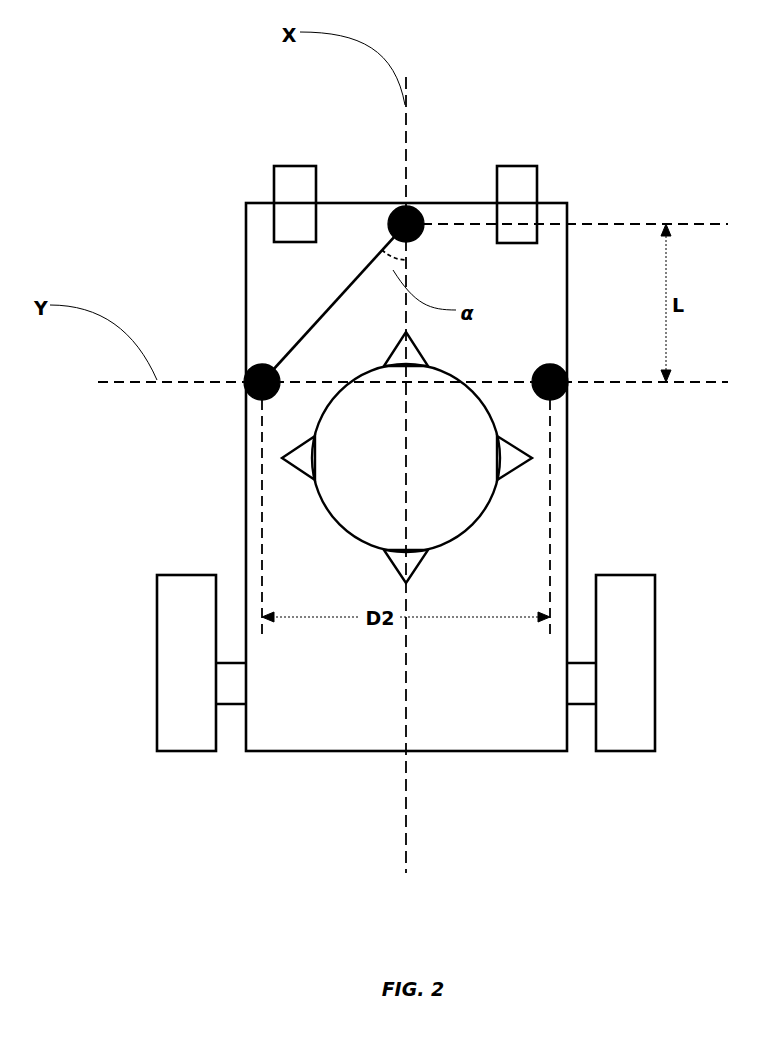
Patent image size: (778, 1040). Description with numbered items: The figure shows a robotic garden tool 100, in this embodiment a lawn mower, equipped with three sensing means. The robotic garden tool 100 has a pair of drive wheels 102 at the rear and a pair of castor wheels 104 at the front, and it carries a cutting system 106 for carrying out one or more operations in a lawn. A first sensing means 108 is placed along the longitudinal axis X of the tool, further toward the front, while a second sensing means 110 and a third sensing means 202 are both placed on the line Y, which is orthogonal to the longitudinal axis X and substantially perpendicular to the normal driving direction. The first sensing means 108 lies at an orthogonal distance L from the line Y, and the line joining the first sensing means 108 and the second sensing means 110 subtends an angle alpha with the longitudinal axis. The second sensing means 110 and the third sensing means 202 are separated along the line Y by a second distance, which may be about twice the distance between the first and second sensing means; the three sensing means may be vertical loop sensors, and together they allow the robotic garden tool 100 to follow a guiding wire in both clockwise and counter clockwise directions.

The robotic garden tool 100 is at (572, 835).
The drive wheels 102 is at (157, 640).
The castor wheels 104 is at (273, 166).
The cutting system 106 is at (493, 497).
The first sensing means 108 is at (396, 207).
The second sensing means 110 is at (246, 368).
The third sensing means 202 is at (550, 400).